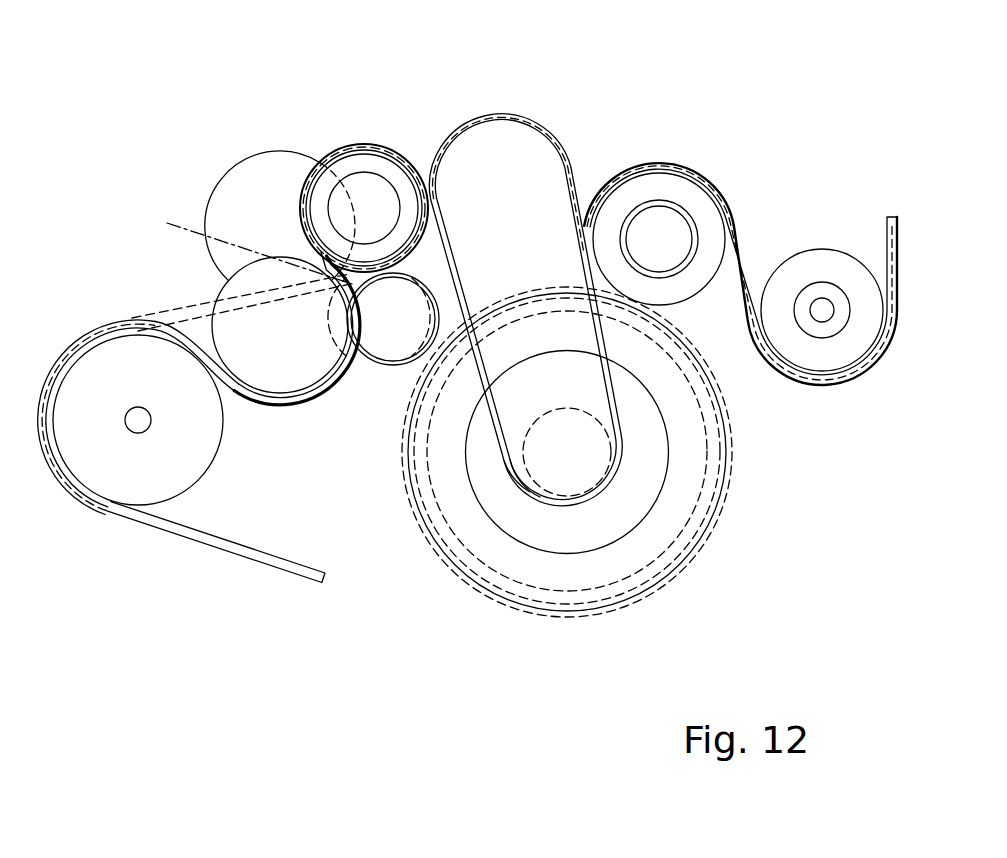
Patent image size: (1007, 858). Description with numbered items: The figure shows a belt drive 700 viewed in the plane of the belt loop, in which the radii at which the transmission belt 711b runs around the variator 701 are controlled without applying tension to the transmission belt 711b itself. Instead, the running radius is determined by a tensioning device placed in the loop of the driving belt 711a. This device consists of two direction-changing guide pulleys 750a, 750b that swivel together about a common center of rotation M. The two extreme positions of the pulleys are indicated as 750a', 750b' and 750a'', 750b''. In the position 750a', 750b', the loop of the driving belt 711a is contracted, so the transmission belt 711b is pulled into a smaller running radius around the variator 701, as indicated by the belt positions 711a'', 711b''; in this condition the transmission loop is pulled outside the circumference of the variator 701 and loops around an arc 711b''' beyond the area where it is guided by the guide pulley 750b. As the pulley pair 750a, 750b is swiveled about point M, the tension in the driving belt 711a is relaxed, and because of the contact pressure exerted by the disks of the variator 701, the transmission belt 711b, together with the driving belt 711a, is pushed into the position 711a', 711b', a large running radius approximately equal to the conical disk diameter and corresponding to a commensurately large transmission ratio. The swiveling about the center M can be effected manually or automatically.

The belt drive 700 is at (680, 123).
The variator 701 is at (660, 533).
The driving belt 711a is at (567, 499).
The driving belt position 711a' is at (567, 479).
The driving belt position 711a'' is at (443, 535).
The transmission belt 711b is at (589, 459).
The transmission belt position 711b' is at (567, 500).
The transmission belt position 711b'' is at (480, 562).
The belt loop 711b''' is at (525, 269).
The direction-changing guide pulley 750a is at (297, 375).
The guide pulley extreme position 750a' is at (215, 325).
The guide pulley extreme position 750a'' is at (238, 211).
The direction-changing guide pulley 750b is at (382, 360).
The guide pulley extreme position 750b' is at (364, 172).
The guide pulley extreme position 750b'' is at (454, 288).
The common center of rotation M is at (245, 248).